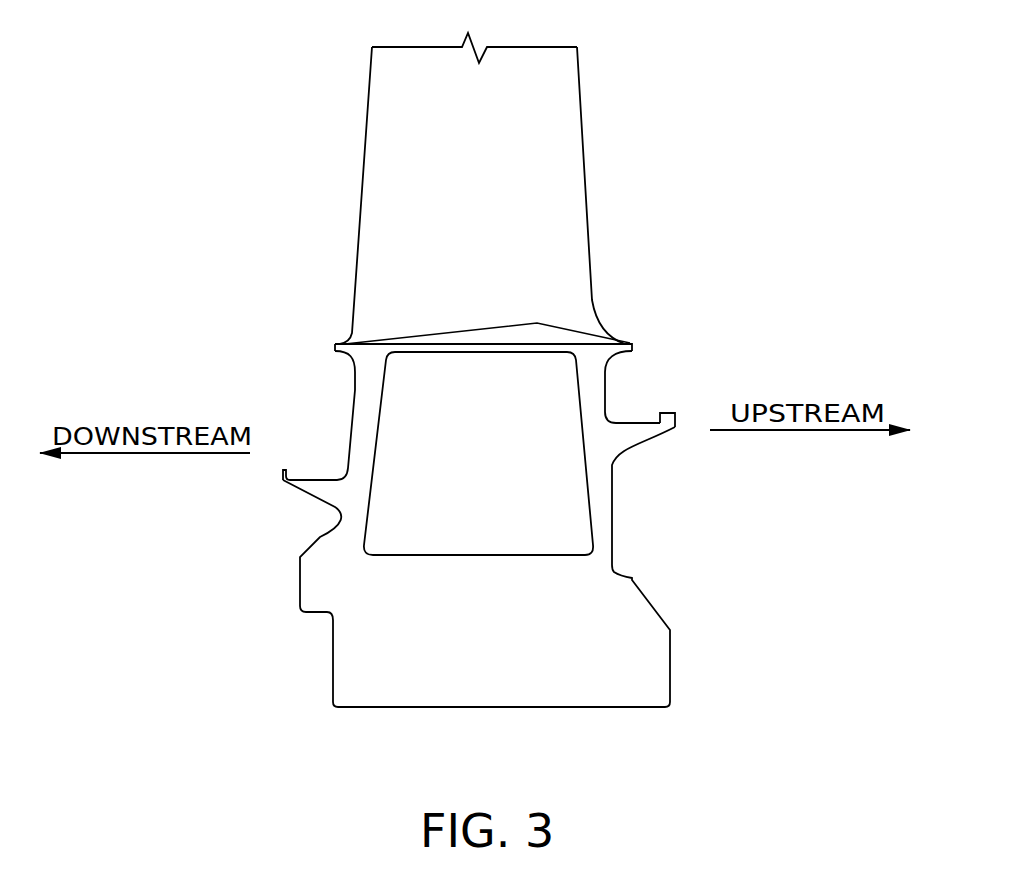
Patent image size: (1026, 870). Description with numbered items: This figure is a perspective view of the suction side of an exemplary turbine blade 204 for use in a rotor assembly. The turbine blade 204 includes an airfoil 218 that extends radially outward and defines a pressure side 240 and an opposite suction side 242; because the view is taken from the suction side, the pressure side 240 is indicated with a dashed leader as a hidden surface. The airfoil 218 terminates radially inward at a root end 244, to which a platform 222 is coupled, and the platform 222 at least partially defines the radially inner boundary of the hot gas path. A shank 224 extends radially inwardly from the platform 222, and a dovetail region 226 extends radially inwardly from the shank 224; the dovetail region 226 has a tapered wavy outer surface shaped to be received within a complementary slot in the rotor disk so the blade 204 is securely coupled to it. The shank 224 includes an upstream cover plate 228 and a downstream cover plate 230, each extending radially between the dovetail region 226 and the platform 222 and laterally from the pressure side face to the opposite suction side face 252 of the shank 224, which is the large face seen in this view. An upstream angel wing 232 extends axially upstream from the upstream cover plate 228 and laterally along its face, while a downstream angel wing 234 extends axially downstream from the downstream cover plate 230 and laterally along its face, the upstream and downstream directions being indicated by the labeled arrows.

The turbine blade 204 is at (712, 137).
The airfoil 218 is at (430, 108).
The platform 222 is at (453, 342).
The shank 224 is at (315, 381).
The dovetail region 226 is at (695, 580).
The upstream cover plate 228 is at (603, 492).
The downstream cover plate 230 is at (350, 432).
The upstream angel wing 232 is at (660, 430).
The downstream angel wing 234 is at (312, 488).
The pressure side 240 is at (365, 148).
The suction side 242 is at (558, 126).
The root end 244 is at (630, 297).
The suction side face 252 is at (506, 466).